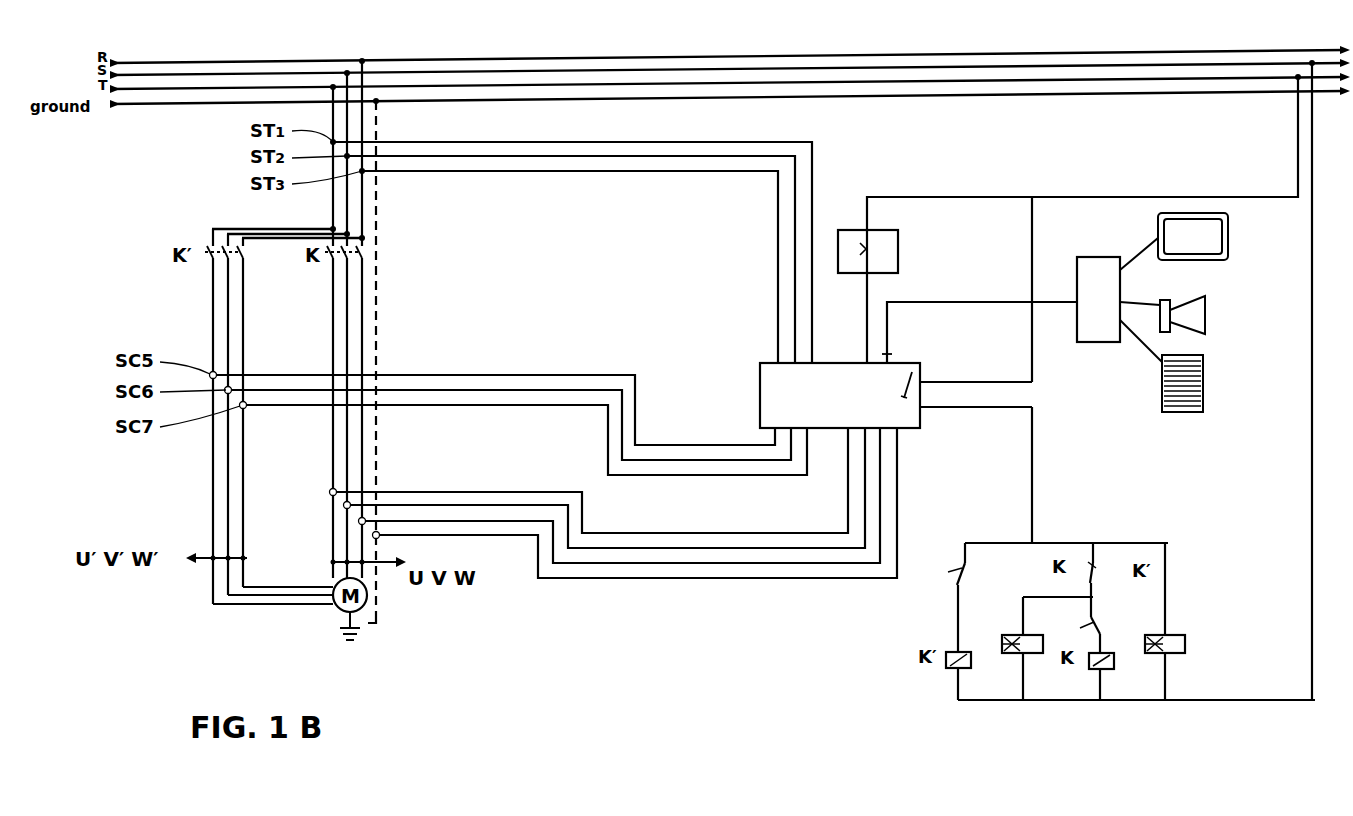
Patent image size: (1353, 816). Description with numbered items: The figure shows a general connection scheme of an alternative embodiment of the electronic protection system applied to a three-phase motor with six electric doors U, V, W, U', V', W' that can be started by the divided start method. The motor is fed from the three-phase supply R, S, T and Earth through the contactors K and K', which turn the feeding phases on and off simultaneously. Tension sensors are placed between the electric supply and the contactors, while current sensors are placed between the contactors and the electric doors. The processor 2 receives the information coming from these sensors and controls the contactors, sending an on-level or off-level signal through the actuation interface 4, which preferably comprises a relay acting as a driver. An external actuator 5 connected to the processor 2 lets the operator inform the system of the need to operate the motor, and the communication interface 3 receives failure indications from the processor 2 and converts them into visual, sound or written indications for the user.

The processor 2 is at (840, 395).
The communication interface 3 is at (1098, 299).
The actuation interface 4 is at (920, 375).
The external actuator 5 is at (868, 251).